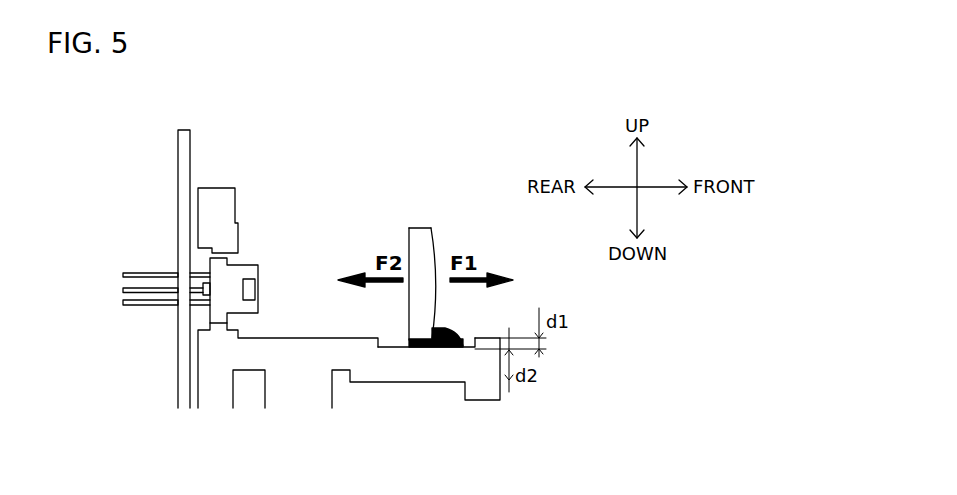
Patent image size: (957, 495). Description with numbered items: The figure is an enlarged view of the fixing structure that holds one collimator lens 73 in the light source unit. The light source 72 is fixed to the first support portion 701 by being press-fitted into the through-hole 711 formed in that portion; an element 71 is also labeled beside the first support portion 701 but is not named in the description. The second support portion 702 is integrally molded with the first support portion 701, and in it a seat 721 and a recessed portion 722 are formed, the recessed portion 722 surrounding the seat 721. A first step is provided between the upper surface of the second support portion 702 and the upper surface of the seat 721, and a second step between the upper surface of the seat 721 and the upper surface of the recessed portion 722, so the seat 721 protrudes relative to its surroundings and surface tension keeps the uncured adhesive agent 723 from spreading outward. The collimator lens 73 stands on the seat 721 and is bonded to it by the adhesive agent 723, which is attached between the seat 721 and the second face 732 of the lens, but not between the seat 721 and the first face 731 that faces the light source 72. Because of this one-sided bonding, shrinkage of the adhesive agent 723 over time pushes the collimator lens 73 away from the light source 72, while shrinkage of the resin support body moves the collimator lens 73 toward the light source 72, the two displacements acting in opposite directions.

The circuit board 71 is at (178, 213).
The first support portion 701 is at (236, 205).
The through-hole 711 is at (248, 252).
The light source 72 is at (258, 290).
The second support portion 702 is at (305, 338).
The seat 721 is at (438, 349).
The recessed portion 722 is at (395, 350).
The adhesive agent 723 is at (447, 329).
The collimator lens 73 is at (436, 250).
The first face 731 is at (409, 241).
The second face 732 is at (433, 243).